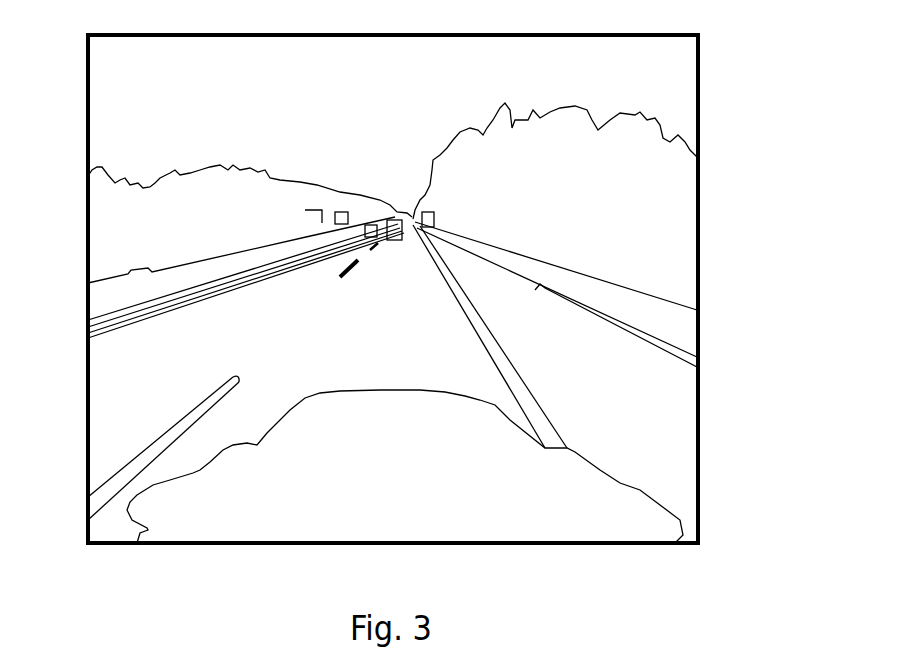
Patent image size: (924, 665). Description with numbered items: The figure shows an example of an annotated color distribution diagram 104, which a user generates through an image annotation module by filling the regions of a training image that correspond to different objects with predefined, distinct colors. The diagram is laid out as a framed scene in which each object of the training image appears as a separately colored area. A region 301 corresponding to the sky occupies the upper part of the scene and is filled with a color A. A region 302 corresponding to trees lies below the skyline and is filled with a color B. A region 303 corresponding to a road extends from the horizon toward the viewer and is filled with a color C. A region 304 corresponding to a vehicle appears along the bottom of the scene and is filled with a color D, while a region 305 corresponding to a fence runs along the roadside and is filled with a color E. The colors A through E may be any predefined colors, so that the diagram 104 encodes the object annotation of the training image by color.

The color distribution diagram 104 is at (605, 33).
The region corresponding to the sky 301 is at (137, 104).
The region corresponding to trees 302 is at (643, 231).
The region corresponding to a road 303 is at (128, 383).
The region corresponding to a vehicle 304 is at (453, 513).
The region corresponding to a fence 305 is at (650, 325).